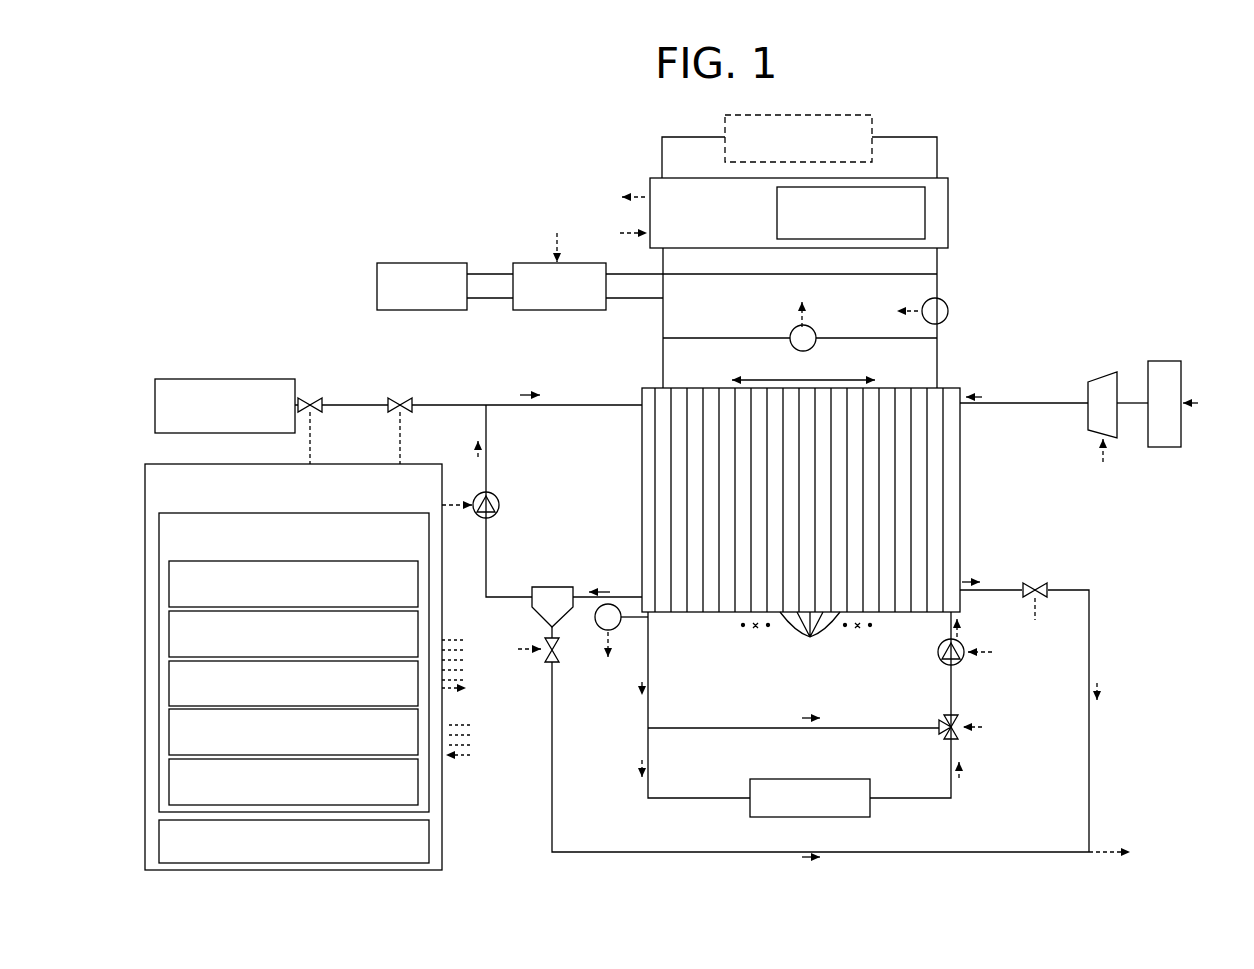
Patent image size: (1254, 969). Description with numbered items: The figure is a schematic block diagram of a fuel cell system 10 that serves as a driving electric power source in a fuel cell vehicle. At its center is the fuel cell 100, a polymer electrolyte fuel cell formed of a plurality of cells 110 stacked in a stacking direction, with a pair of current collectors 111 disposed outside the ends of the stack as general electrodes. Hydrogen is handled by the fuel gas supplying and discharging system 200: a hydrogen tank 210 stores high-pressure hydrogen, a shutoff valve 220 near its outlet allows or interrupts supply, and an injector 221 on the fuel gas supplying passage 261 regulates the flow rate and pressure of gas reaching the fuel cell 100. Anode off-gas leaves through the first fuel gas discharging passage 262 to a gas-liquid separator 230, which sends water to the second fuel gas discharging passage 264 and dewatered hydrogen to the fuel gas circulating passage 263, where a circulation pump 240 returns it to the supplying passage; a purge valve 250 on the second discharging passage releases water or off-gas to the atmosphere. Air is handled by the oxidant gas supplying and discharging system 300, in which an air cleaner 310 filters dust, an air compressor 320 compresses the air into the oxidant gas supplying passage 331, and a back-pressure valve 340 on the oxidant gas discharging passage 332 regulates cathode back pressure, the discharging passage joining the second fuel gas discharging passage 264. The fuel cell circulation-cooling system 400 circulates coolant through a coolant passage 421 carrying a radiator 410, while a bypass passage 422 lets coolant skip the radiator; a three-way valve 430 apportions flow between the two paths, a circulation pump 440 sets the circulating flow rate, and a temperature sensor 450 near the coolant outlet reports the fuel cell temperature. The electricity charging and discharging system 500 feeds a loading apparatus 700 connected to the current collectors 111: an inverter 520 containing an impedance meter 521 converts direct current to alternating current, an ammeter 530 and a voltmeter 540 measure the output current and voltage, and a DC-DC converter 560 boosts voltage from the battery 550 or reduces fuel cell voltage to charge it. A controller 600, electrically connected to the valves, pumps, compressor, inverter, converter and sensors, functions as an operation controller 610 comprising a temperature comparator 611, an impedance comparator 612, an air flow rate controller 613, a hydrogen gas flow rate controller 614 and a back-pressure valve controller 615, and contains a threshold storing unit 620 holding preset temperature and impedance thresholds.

The fuel cell system 10 is at (245, 232).
The fuel cell 100 is at (970, 512).
The cell 110 is at (807, 641).
The current collector 111 is at (657, 387).
The fuel gas supplying and discharging system 200 is at (308, 370).
The hydrogen tank 210 is at (218, 376).
The shutoff valve 220 is at (322, 400).
The injector 221 is at (412, 400).
The gas-liquid separator 230 is at (542, 587).
The circulation pump 240 is at (496, 494).
The purge valve 250 is at (540, 661).
The fuel gas supplying passage 261 is at (558, 403).
The first fuel gas discharging passage 262 is at (615, 590).
The fuel gas circulating passage 263 is at (490, 546).
The second fuel gas discharging passage 264 is at (550, 807).
The oxidant gas supplying and discharging system 300 is at (1043, 367).
The air cleaner 310 is at (1170, 361).
The air compressor 320 is at (1092, 380).
The oxidant gas supplying passage 331 is at (1003, 408).
The oxidant gas discharging passage 332 is at (983, 583).
The back-pressure valve 340 is at (1035, 582).
The fuel cell circulation-cooling system 400 is at (973, 805).
The radiator 410 is at (797, 817).
The coolant passage 421 is at (645, 712).
The bypass passage 422 is at (697, 725).
The three-way valve 430 is at (960, 742).
The circulation pump 440 is at (960, 663).
The temperature sensor 450 is at (598, 630).
The electricity charging and discharging system 500 is at (1032, 248).
The inverter 520 is at (950, 228).
The impedance meter 521 is at (925, 200).
The ammeter 530 is at (948, 310).
The voltmeter 540 is at (806, 326).
The battery 550 is at (413, 311).
The DC-DC converter 560 is at (543, 311).
The controller 600 is at (193, 462).
The operation controller 610 is at (159, 535).
The temperature comparator 611 is at (169, 583).
The impedance comparator 612 is at (169, 631).
The air flow rate controller 613 is at (169, 681).
The hydrogen gas flow rate controller 614 is at (169, 729).
The back-pressure valve controller 615 is at (169, 776).
The threshold storing unit 620 is at (159, 844).
The loading apparatus 700 is at (873, 132).